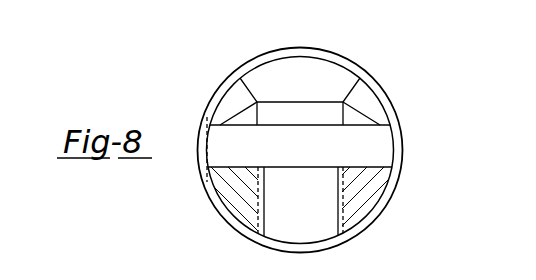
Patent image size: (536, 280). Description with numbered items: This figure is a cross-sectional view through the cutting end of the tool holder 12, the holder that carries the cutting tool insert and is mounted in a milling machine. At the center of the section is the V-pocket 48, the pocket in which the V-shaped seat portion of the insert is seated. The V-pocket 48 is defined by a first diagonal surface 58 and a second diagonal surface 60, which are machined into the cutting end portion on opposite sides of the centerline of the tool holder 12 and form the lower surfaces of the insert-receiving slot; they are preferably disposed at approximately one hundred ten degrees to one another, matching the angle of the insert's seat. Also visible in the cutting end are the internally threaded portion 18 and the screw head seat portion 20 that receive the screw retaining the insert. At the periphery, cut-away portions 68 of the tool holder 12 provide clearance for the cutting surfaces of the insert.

The tool holder 12 is at (365, 193).
The internally threaded portion 18 is at (337, 207).
The screw head seat portion 20 is at (390, 155).
The V-pocket 48 is at (273, 140).
The first diagonal surface 58 is at (362, 133).
The second diagonal surface 60 is at (357, 150).
The cut-away portions 68 is at (402, 152).